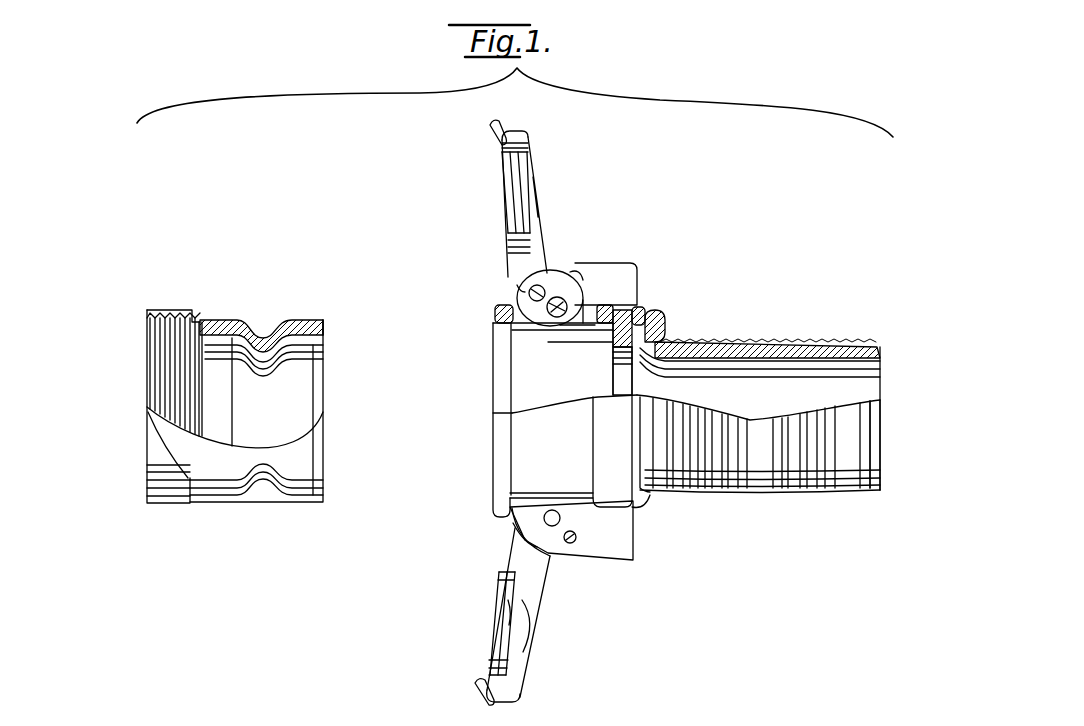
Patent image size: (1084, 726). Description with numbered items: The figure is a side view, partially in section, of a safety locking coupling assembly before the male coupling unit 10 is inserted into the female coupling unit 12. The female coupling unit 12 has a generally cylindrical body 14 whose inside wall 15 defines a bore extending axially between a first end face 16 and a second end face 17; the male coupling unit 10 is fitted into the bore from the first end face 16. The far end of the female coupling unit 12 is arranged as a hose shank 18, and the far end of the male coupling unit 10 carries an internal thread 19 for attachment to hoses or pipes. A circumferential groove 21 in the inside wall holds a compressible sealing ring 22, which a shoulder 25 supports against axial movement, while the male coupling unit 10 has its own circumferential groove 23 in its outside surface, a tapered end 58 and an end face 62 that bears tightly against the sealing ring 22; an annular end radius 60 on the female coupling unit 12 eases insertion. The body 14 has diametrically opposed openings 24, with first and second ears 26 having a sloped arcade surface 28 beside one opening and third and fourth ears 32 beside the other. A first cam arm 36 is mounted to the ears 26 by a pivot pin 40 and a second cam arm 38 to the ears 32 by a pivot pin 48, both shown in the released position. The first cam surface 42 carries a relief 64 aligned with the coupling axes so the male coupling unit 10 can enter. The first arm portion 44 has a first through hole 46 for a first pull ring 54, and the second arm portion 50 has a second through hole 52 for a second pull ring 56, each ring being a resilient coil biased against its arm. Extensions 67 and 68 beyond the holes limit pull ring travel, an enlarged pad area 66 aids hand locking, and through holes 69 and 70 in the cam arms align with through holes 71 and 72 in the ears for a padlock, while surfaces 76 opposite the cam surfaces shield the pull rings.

The male coupling unit 10 is at (190, 220).
The female coupling unit 12 is at (832, 232).
The body 14 is at (660, 487).
The inside wall 15 is at (793, 347).
The first end face 16 is at (492, 450).
The second end face 17 is at (880, 438).
The hose shank 18 is at (833, 347).
The internal thread 19 is at (157, 358).
The circumferential groove 21 is at (640, 322).
The sealing ring 22 is at (645, 318).
The circumferential groove 23 is at (263, 333).
The opening 24 is at (640, 282).
The shoulder 25 is at (657, 330).
The first and second ears 26 is at (620, 275).
The sloped arcade surface 28 is at (620, 310).
The third and fourth ears 32 is at (603, 543).
The first cam arm 36 is at (547, 262).
The second cam arm 38 is at (530, 557).
The pivot pin 40 is at (523, 282).
The first cam surface 42 is at (533, 268).
The first arm portion 44 is at (537, 190).
The first through hole 46 is at (512, 133).
The pivot pin 48 is at (553, 523).
The second arm portion 50 is at (537, 587).
The second through hole 52 is at (505, 695).
The first pull ring 54 is at (503, 245).
The second pull ring 56 is at (507, 615).
The tapered end 58 is at (323, 330).
The annular end radius 60 is at (497, 313).
The end face 62 is at (327, 333).
The relief 64 is at (520, 288).
The enlarged pad area 66 is at (516, 208).
The extension 67 is at (490, 134).
The extension 68 is at (480, 683).
The through hole 69 is at (532, 288).
The through hole 70 is at (523, 543).
The through hole 71 is at (580, 275).
The through hole 72 is at (572, 540).
The surface 76 is at (548, 305).